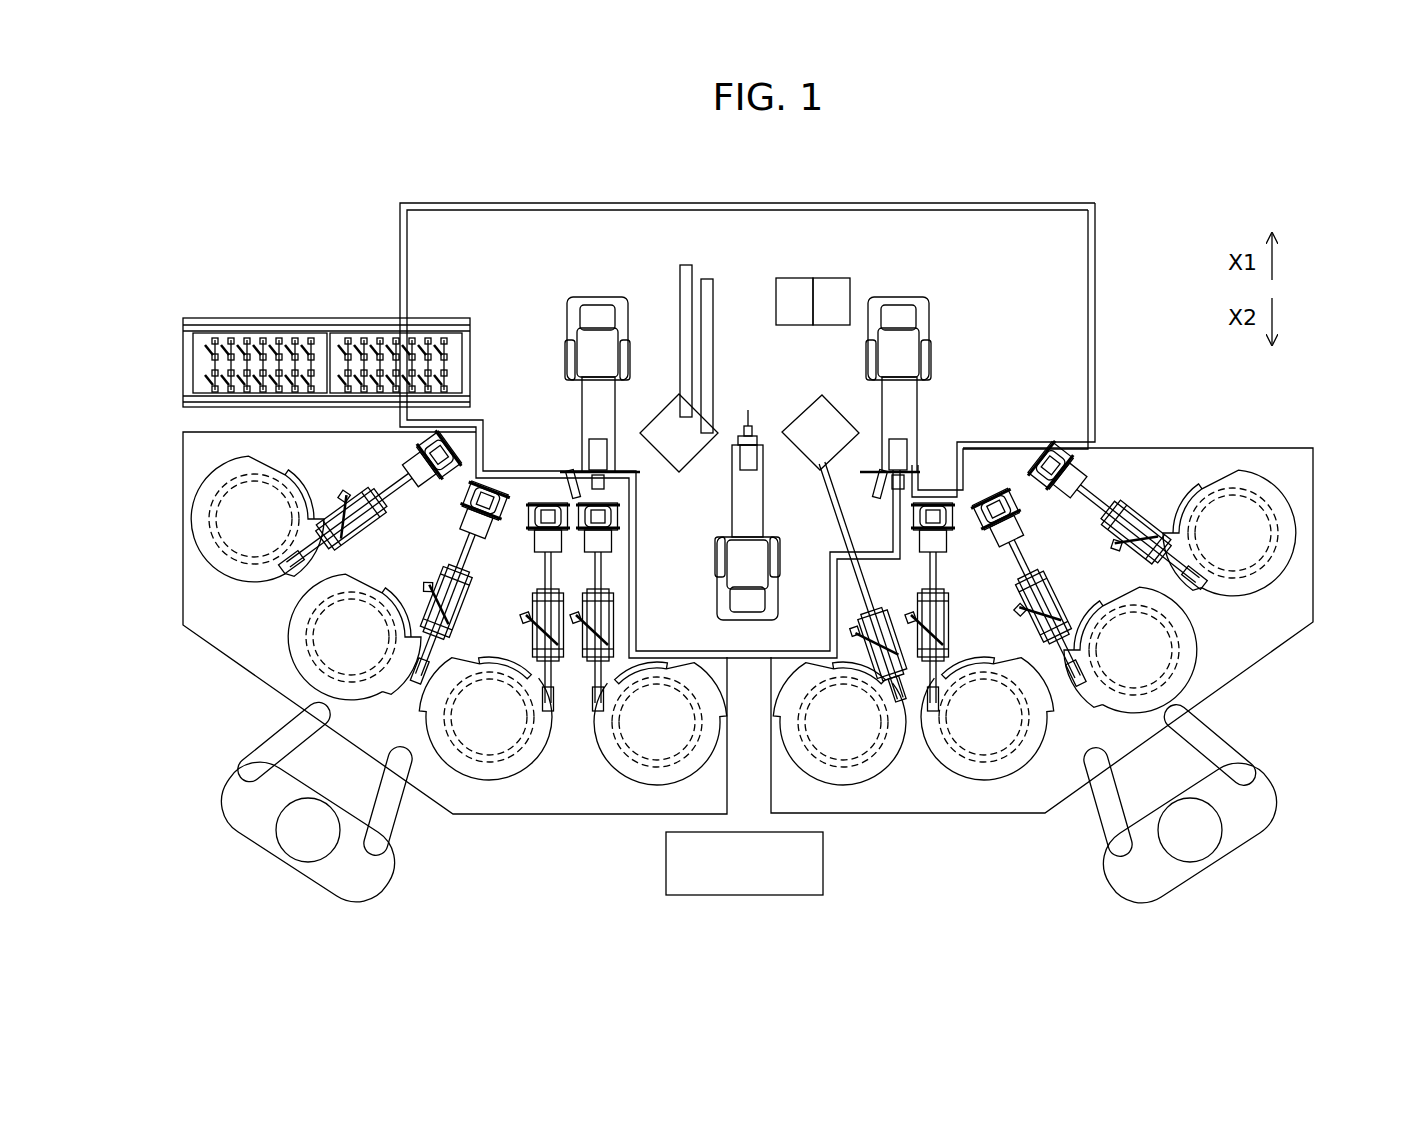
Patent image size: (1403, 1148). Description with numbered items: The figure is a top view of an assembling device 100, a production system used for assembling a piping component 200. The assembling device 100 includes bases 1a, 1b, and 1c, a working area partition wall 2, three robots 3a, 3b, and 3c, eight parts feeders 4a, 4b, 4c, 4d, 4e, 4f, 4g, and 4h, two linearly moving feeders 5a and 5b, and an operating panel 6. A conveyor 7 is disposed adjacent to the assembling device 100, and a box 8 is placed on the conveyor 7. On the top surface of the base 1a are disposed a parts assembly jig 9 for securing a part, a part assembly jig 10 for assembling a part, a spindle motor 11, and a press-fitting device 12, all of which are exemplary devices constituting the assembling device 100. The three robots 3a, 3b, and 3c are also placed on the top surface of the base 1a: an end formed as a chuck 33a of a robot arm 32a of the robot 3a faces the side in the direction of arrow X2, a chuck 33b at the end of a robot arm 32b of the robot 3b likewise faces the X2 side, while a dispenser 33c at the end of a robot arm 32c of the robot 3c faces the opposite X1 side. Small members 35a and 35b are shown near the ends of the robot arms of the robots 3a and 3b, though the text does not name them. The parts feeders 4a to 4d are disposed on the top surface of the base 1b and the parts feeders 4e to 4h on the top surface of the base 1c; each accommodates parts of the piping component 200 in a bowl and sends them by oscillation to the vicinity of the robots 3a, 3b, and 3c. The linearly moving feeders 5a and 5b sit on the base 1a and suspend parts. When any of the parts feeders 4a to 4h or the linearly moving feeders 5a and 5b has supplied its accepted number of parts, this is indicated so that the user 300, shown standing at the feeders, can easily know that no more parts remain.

The assembling device 100 is at (1140, 217).
The base 1a is at (995, 232).
The base 1b is at (1283, 450).
The base 1c is at (190, 455).
The working area partition wall 2 is at (1097, 355).
The robot 3a is at (897, 308).
The robot 3b is at (598, 308).
The robot 3c is at (760, 518).
The robot arm 32a is at (887, 405).
The robot arm 32b is at (588, 400).
The robot arm 32c is at (750, 503).
The chuck 33a is at (905, 478).
The chuck 33b is at (605, 495).
The dispenser 33c is at (750, 420).
The sensor 35a is at (874, 492).
The sensor 35b is at (577, 480).
The parts feeder 4a is at (1300, 540).
The parts feeder 4b is at (1180, 660).
The parts feeder 4c is at (992, 775).
The parts feeder 4d is at (862, 775).
The parts feeder 4e is at (640, 775).
The parts feeder 4f is at (490, 760).
The parts feeder 4g is at (300, 665).
The parts feeder 4h is at (230, 528).
The linearly moving feeder 5a is at (688, 265).
The linearly moving feeder 5b is at (708, 283).
The operating panel 6 is at (812, 877).
The conveyor 7 is at (192, 320).
The box 8 is at (320, 355).
The parts assembly jig 9 is at (672, 428).
The part assembly jig 10 is at (812, 428).
The spindle motor 11 is at (790, 278).
The press-fitting device 12 is at (835, 278).
The piping component 200 is at (263, 338).
The user 300 is at (250, 820).